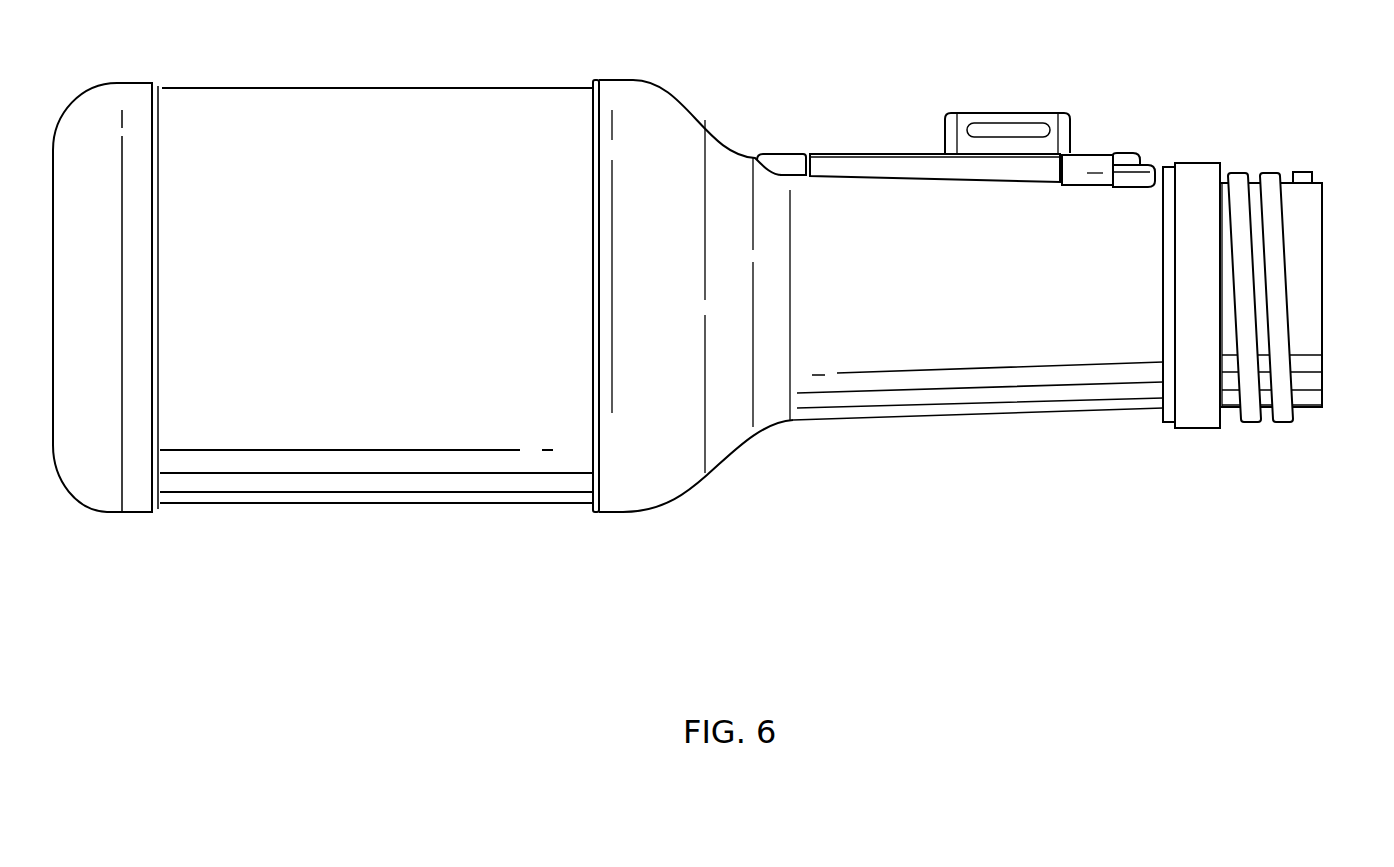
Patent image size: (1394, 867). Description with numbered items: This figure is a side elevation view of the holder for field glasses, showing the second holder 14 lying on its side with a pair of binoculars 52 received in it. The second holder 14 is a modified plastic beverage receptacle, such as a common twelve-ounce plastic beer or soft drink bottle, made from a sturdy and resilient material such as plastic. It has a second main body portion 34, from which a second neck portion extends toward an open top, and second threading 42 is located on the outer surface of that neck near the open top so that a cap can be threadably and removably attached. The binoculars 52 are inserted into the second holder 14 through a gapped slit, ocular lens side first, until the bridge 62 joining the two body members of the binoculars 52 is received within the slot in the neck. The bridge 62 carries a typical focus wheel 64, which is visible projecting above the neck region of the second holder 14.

The second holder 14 is at (446, 522).
The second main body portion 34 is at (917, 358).
The second threading 42 is at (1282, 379).
The binoculars 52 is at (1113, 141).
The bridge 62 is at (883, 162).
The focus wheel 64 is at (992, 113).